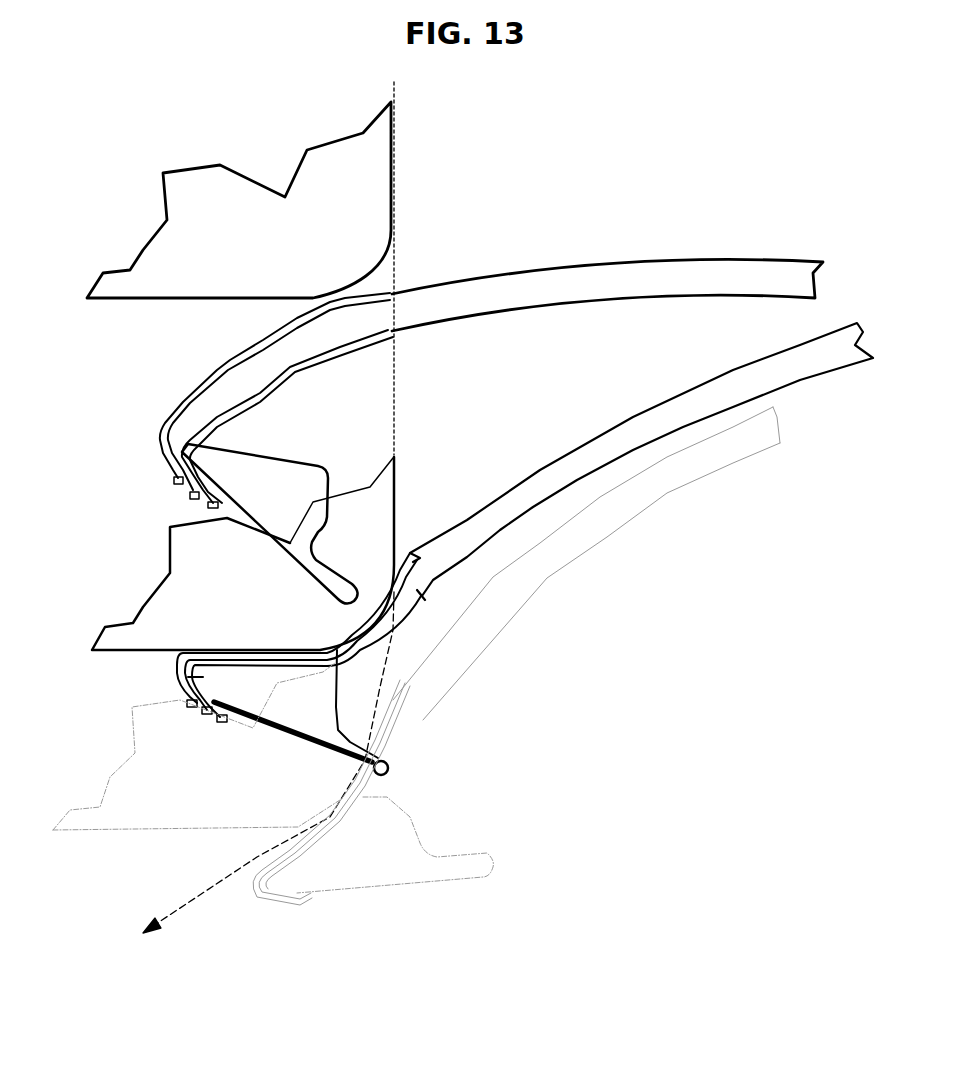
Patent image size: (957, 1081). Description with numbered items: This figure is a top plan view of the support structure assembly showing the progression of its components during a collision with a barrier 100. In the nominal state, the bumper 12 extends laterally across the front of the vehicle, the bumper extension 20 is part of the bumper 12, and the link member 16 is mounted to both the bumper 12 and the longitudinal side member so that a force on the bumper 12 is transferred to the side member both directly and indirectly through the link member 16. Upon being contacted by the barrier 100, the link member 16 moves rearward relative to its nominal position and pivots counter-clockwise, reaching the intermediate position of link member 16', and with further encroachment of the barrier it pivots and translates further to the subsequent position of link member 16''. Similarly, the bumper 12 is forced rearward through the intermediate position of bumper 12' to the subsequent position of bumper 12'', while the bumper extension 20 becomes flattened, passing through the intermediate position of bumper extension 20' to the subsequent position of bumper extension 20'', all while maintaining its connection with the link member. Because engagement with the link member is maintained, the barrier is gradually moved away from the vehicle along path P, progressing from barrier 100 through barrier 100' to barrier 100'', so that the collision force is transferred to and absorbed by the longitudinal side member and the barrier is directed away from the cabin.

The barrier 100 is at (285, 200).
The bumper 12 is at (607, 267).
The bumper extension 20 is at (248, 400).
The link member 16 is at (274, 516).
The bumper 12' is at (641, 461).
The barrier 100' is at (280, 553).
The bumper 12'' is at (586, 563).
The bumper extension 20' is at (249, 637).
The link member 16' is at (236, 712).
The barrier 100'' is at (196, 775).
The bumper extension 20'' is at (300, 792).
The link member 16'' is at (395, 879).
The path P is at (390, 637).